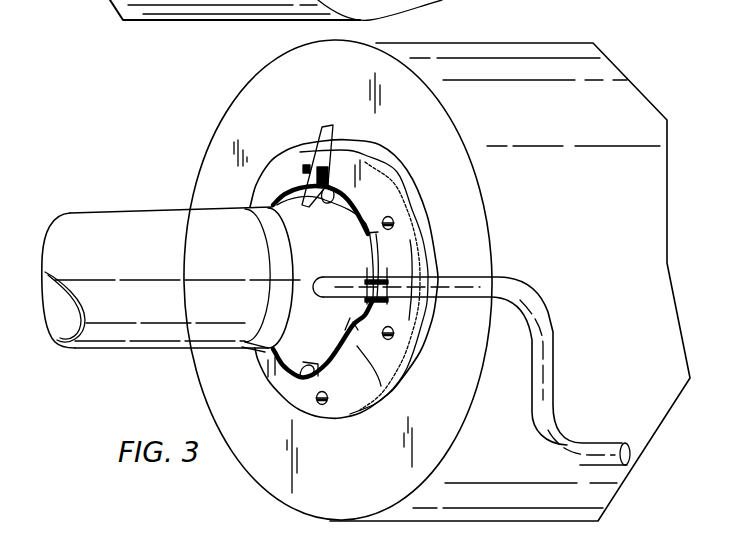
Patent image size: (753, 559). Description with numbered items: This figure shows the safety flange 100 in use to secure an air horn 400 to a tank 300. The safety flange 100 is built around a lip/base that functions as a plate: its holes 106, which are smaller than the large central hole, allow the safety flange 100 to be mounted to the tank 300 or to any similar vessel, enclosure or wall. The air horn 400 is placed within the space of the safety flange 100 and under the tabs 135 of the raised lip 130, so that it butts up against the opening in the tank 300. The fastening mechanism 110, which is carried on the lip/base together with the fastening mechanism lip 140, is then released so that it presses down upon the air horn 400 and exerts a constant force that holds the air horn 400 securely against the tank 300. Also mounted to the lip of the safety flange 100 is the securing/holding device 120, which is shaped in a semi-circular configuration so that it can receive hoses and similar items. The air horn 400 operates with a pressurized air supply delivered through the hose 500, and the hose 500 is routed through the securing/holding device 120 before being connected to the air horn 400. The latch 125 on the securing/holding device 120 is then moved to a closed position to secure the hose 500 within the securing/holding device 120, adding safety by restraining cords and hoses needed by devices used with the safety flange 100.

The safety flange 100 is at (273, 472).
The holes 106 is at (394, 222).
The fastening mechanism 110 is at (318, 137).
The securing/holding device 120 is at (388, 272).
The latch 125 is at (414, 360).
The raised lip 130 is at (386, 395).
The tabs 135 is at (300, 371).
The fastening mechanism lip 140 is at (355, 212).
The tank 300 is at (528, 42).
The air horn 400 is at (118, 212).
The hose 500 is at (555, 368).